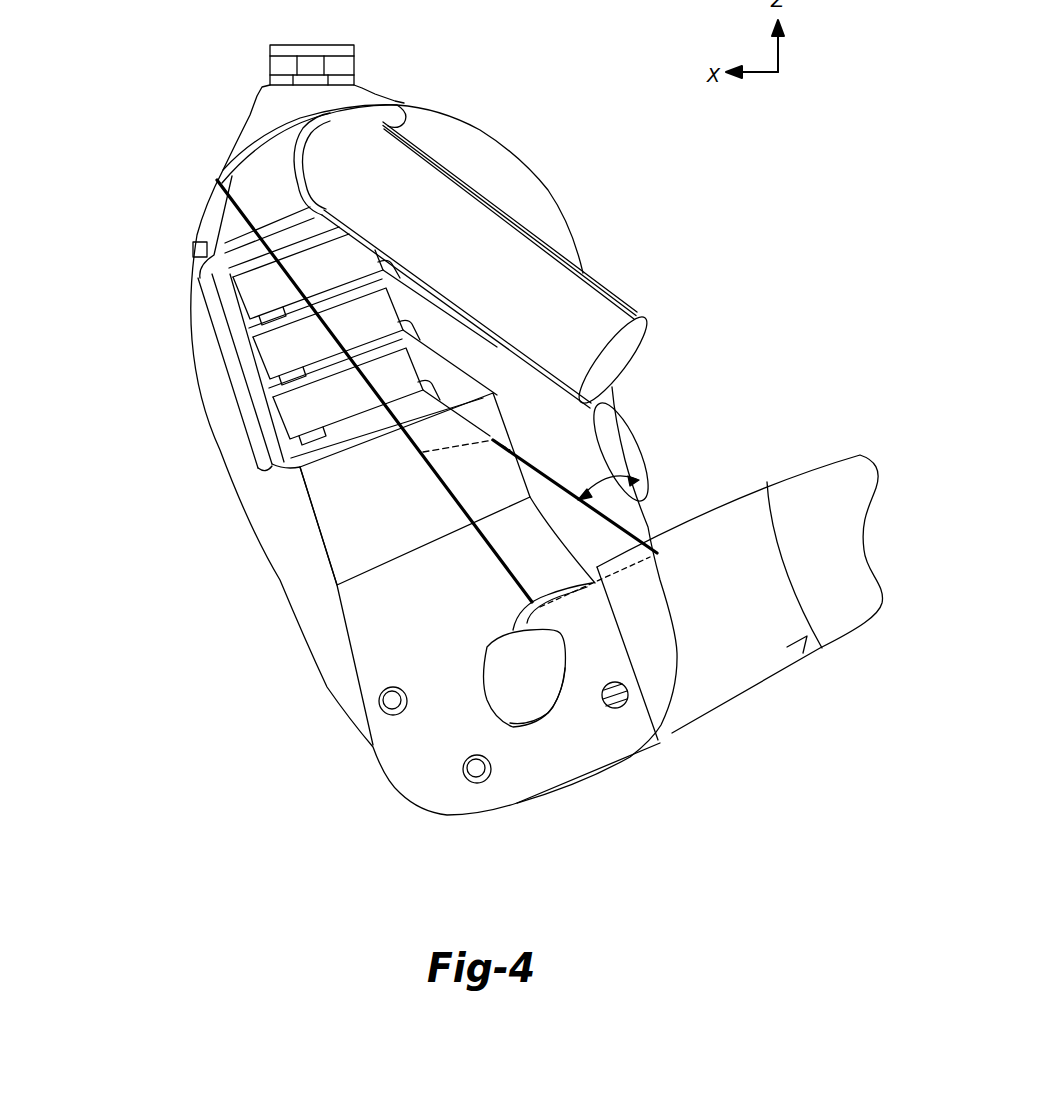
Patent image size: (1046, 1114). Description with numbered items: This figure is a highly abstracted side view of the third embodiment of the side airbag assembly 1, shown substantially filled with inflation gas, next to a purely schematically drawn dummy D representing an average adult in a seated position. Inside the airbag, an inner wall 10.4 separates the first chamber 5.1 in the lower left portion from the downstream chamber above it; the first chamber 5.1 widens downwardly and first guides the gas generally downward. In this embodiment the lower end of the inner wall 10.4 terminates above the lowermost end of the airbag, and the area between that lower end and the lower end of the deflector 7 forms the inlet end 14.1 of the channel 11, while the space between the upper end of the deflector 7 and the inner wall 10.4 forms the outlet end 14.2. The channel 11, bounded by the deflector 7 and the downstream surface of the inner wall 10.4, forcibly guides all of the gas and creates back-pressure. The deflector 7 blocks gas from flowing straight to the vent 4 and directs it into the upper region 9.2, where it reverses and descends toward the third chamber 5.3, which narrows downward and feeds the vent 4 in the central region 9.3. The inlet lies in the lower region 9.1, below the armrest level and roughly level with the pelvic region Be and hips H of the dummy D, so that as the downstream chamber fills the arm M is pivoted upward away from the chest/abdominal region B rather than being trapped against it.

The airbag assembly 1 is at (516, 143).
The arm M is at (596, 308).
The vent 4 is at (632, 441).
The first chamber 5.1 is at (337, 673).
The third chamber 5.3 is at (538, 470).
The deflector 7 is at (625, 528).
The lower region 9.1 is at (295, 738).
The upper region 9.2 is at (306, 311).
The central region 9.3 is at (208, 528).
The inner wall 10.4 is at (248, 215).
The channel 11 is at (600, 548).
The inlet end 14.1 is at (567, 580).
The outlet end 14.2 is at (457, 452).
The chest/abdominal region B is at (126, 483).
The pelvic region Be is at (191, 720).
The hips H is at (335, 587).
The dummy D is at (818, 452).